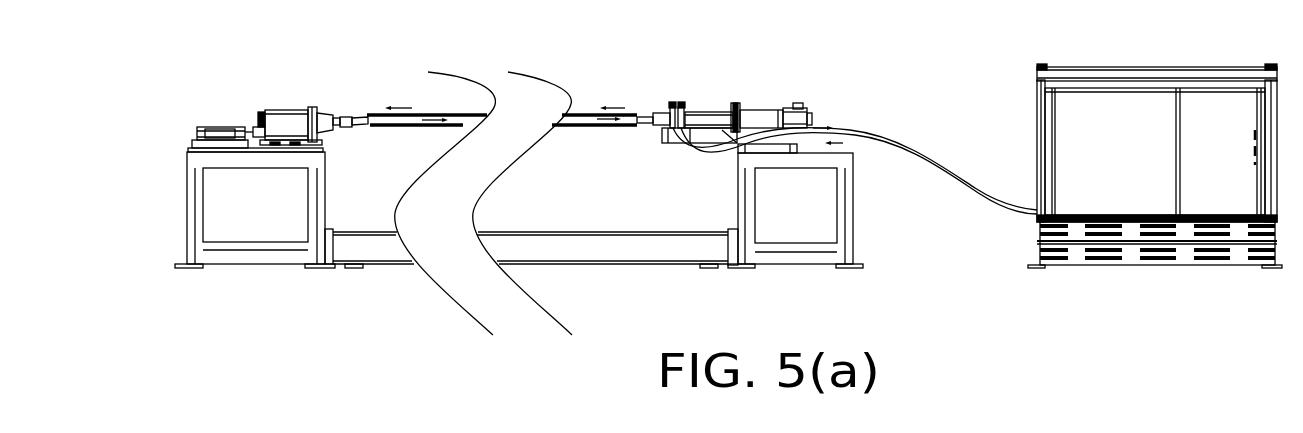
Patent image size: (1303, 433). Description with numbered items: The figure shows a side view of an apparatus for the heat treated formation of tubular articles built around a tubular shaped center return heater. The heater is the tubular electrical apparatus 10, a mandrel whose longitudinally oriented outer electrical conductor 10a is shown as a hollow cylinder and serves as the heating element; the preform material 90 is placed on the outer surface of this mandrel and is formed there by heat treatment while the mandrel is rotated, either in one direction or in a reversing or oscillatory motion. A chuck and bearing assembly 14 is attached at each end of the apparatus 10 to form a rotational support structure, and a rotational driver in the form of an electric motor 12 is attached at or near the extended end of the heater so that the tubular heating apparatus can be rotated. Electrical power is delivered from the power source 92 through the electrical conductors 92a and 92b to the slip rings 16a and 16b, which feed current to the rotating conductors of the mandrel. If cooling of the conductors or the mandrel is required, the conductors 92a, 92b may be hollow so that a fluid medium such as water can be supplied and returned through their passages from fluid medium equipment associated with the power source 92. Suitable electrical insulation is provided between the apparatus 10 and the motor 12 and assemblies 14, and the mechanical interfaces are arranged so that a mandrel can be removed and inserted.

The tubular electrical apparatus 10 is at (397, 138).
The outer electrical conductor 10a is at (366, 114).
The electric motor 12 is at (800, 100).
The chuck and bearing assembly 14 is at (322, 98).
The slip ring 16a is at (680, 100).
The slip ring 16b is at (667, 100).
The preform material 90 is at (588, 104).
The power source 92 is at (1140, 161).
The electrical conductor 92a is at (910, 135).
The electrical conductor 92b is at (884, 160).